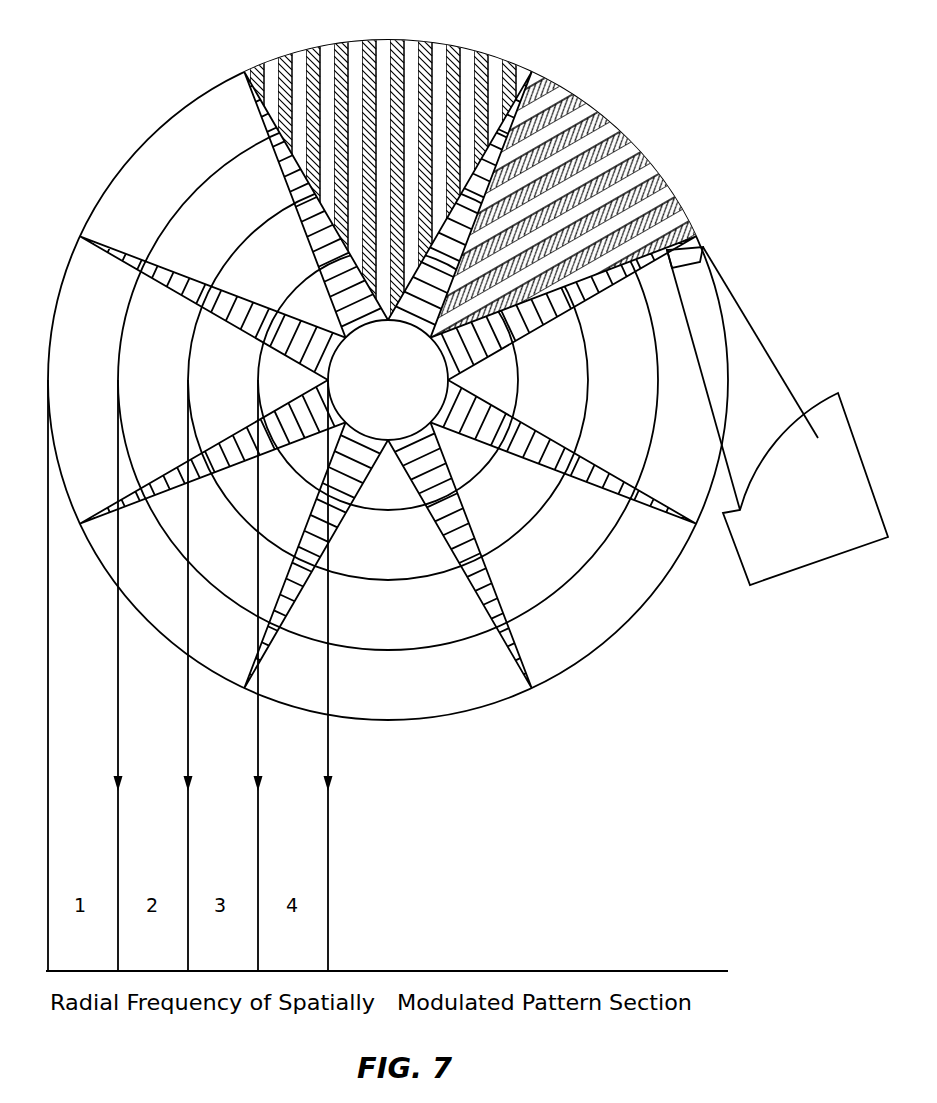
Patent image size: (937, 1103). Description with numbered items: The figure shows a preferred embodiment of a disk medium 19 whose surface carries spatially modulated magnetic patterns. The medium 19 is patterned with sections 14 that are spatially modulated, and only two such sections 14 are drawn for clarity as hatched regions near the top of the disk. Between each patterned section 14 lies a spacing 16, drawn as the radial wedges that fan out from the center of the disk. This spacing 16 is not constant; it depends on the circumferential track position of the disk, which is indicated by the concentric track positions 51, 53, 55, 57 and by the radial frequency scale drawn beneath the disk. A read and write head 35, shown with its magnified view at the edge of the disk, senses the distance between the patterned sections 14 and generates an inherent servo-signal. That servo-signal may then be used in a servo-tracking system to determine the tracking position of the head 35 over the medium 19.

The disk medium 19 is at (118, 88).
The spacing 16 is at (295, 222).
The patterned sections 14 is at (453, 43).
The head 35 is at (690, 243).
The circumferential track position 51 is at (457, 488).
The circumferential track position 53 is at (537, 522).
The circumferential track position 55 is at (540, 600).
The circumferential track position 57 is at (543, 683).